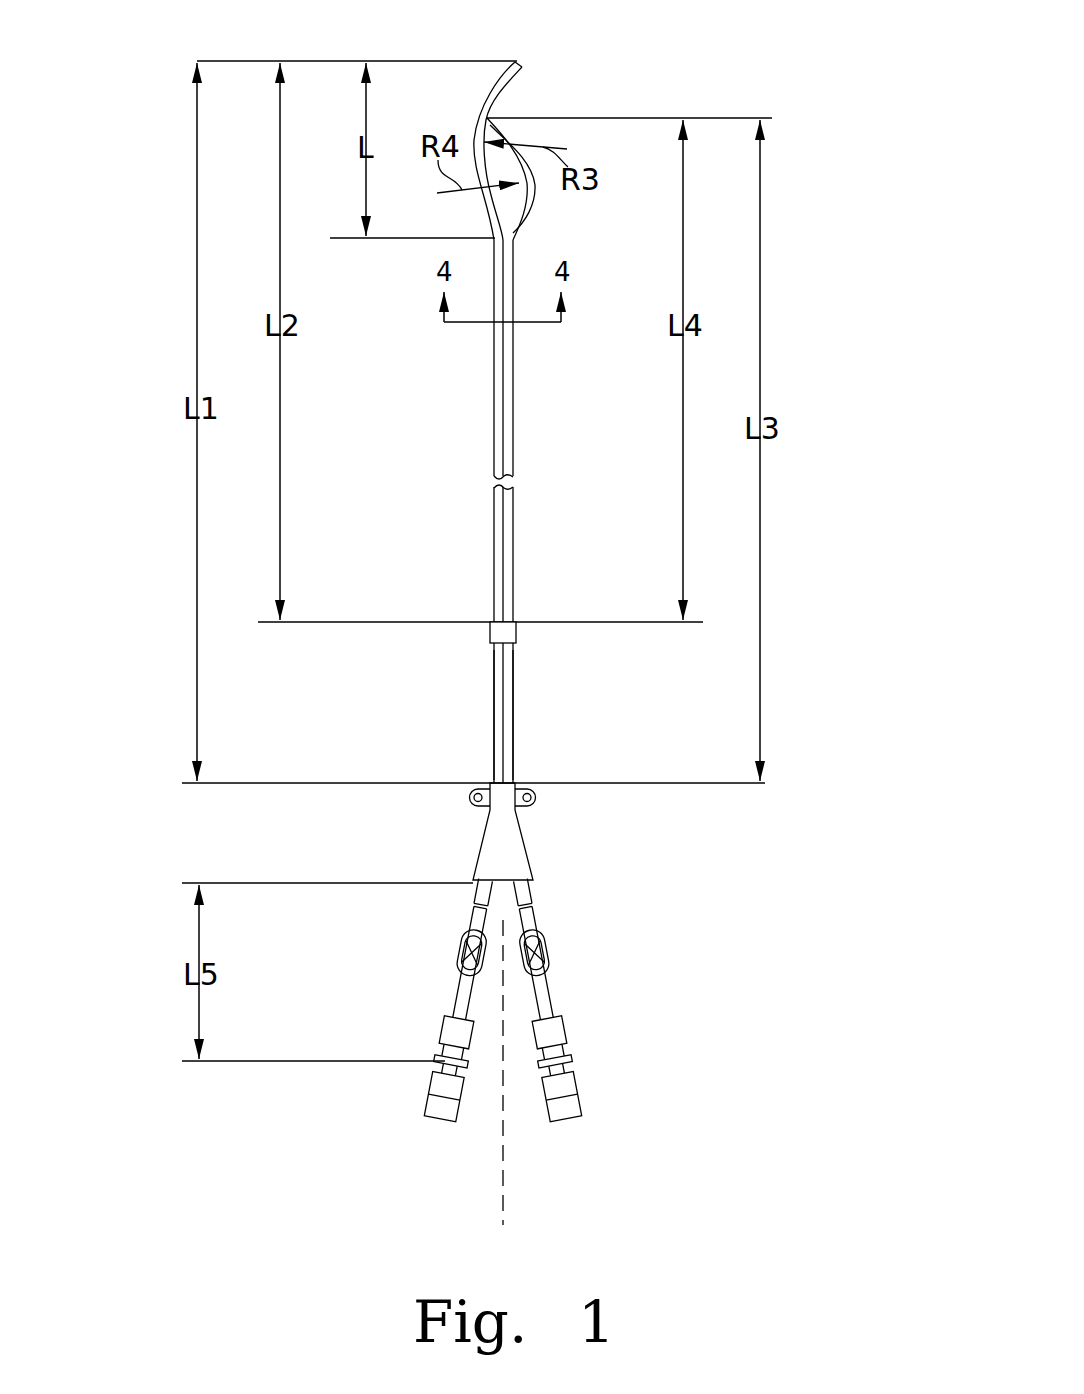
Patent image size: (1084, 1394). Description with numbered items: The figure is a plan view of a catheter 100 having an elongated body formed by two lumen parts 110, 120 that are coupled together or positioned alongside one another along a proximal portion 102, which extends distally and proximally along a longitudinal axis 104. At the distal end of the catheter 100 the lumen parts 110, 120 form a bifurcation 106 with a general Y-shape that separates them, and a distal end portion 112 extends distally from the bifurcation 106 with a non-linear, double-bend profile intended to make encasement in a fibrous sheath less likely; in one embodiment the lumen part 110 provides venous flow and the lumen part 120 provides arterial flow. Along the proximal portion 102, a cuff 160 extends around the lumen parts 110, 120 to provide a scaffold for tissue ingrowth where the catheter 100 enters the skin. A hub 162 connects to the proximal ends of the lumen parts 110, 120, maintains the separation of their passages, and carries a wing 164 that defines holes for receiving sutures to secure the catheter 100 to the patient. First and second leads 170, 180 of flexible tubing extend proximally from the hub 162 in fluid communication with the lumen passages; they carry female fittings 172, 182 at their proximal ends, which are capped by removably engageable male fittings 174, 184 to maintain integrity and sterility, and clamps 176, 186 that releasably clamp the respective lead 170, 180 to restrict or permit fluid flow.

The catheter 100 is at (678, 92).
The proximal portion 102 is at (489, 656).
The longitudinal axis 104 is at (505, 1198).
The bifurcation 106 is at (507, 227).
The lumen part 110 is at (491, 402).
The distal end portion 112 is at (534, 96).
The lumen part 120 is at (517, 521).
The cuff 160 is at (516, 632).
The hub 162 is at (528, 853).
The wing 164 is at (537, 796).
The first lead 170 is at (470, 1000).
The female fitting 172 is at (475, 1037).
The male fitting 174 is at (445, 1110).
The clamp 176 is at (462, 970).
The second lead 180 is at (538, 1000).
The female fitting 182 is at (555, 1035).
The male fitting 184 is at (560, 1110).
The clamp 186 is at (545, 970).